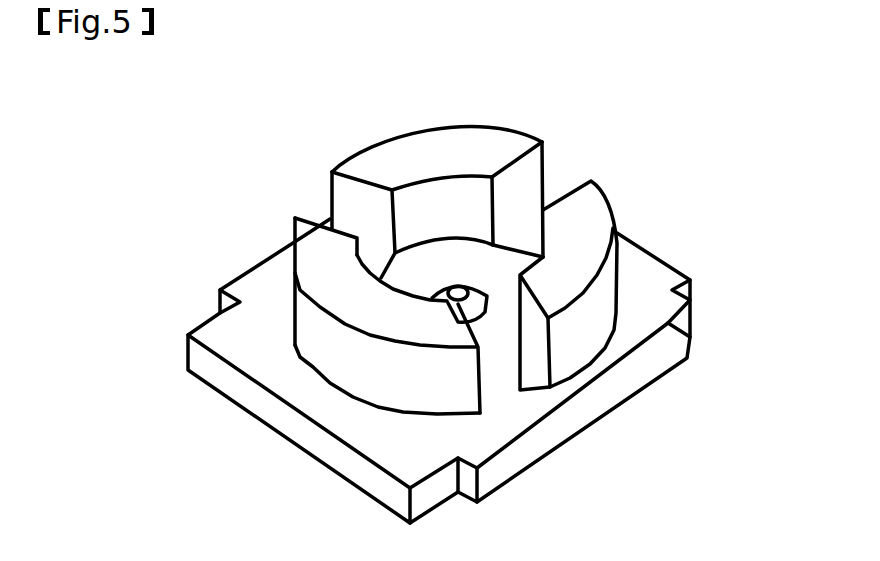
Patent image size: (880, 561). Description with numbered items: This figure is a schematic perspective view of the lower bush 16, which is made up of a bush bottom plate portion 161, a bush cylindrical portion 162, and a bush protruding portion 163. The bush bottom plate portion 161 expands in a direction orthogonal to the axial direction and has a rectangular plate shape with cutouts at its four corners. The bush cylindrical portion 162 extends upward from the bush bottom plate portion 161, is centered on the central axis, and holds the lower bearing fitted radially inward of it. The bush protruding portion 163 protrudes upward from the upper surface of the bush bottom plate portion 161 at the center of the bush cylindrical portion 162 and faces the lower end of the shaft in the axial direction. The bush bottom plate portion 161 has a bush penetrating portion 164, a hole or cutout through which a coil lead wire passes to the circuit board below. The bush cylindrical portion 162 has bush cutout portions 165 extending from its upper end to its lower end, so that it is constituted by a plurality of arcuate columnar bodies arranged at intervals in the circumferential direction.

The lower bush 16 is at (663, 144).
The bush bottom plate portion 161 is at (283, 430).
The bush cylindrical portion 162 is at (302, 245).
The bush protruding portion 163 is at (488, 303).
The bush penetrating portion 164 is at (522, 397).
The bush cutout portion 165 is at (530, 173).